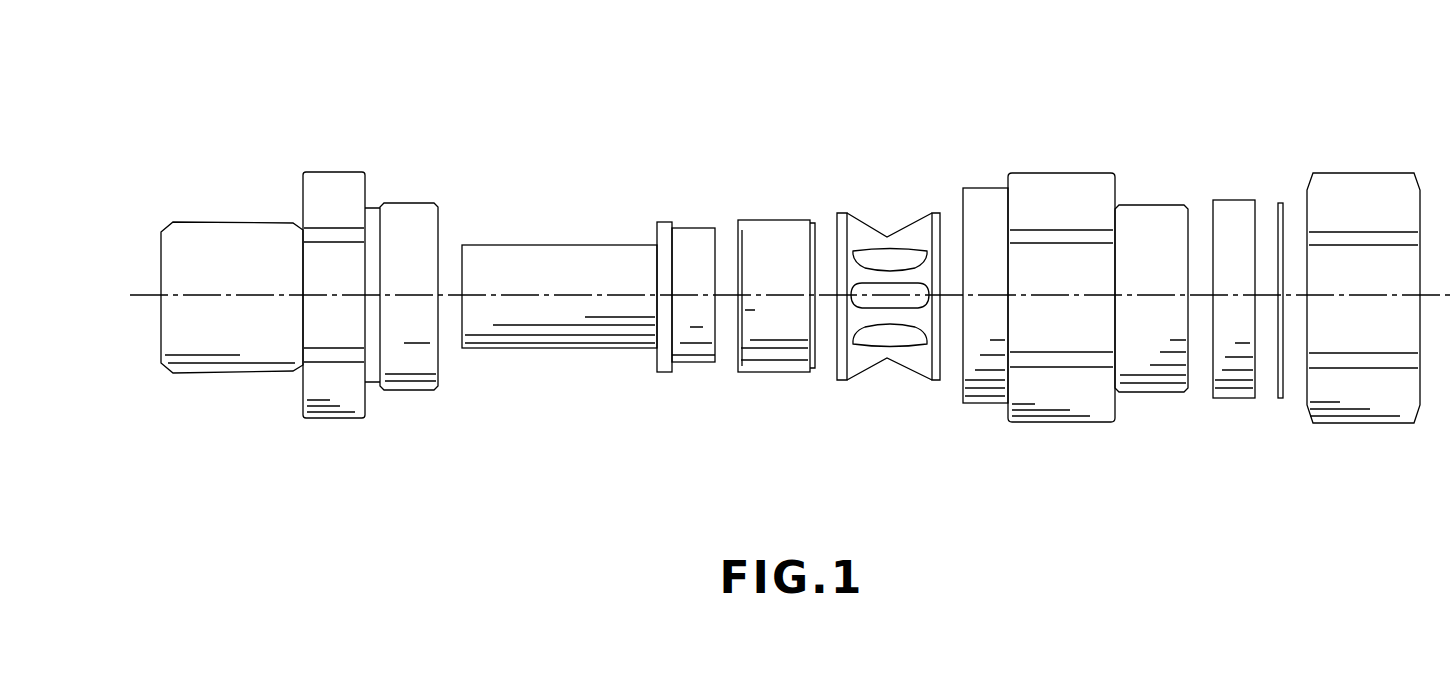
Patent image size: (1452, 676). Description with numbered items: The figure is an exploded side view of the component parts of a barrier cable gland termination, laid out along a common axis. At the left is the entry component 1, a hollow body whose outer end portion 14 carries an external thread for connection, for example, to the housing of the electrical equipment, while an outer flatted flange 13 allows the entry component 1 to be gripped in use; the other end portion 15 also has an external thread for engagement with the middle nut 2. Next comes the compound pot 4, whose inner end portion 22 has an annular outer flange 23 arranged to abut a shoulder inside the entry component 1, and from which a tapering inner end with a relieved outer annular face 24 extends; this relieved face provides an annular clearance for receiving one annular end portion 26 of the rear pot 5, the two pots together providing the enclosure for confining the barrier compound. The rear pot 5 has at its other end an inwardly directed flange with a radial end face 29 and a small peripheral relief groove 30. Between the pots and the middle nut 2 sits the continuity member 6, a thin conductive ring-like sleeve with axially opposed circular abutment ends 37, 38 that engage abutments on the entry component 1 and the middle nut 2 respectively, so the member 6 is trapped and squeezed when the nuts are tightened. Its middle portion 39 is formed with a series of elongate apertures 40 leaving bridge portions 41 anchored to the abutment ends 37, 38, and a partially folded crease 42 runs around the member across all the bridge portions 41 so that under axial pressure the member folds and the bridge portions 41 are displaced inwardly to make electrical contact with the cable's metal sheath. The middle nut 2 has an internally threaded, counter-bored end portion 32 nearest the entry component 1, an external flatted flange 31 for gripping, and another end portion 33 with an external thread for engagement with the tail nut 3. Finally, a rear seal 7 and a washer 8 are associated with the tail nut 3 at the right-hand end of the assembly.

The entry component 1 is at (318, 150).
The outer end portion 14 is at (236, 232).
The outer flatted flange 13 is at (348, 170).
The other end portion 15 is at (414, 218).
The compound pot 4 is at (562, 233).
The annular outer flange 23 is at (662, 360).
The inner end portion 22 is at (690, 348).
The relieved outer annular face 24 is at (707, 360).
The rear pot 5 is at (765, 218).
The radial end face 29 is at (823, 232).
The annular end portion 26 is at (763, 357).
The peripheral relief groove 30 is at (813, 370).
The continuity member 6 is at (868, 198).
The circular abutment end 37 is at (847, 217).
The circular abutment end 38 is at (936, 213).
The middle portion 39 is at (890, 217).
The bridge portions 41 is at (905, 280).
The elongate apertures 40 is at (905, 337).
The partially folded crease 42 is at (887, 363).
The middle nut 2 is at (1048, 158).
The end portion 32 is at (993, 193).
The external flatted flange 31 is at (1083, 180).
The other end portion 33 is at (1163, 217).
The rear seal 7 is at (1223, 183).
The washer 8 is at (1280, 197).
The tail nut 3 is at (1343, 160).